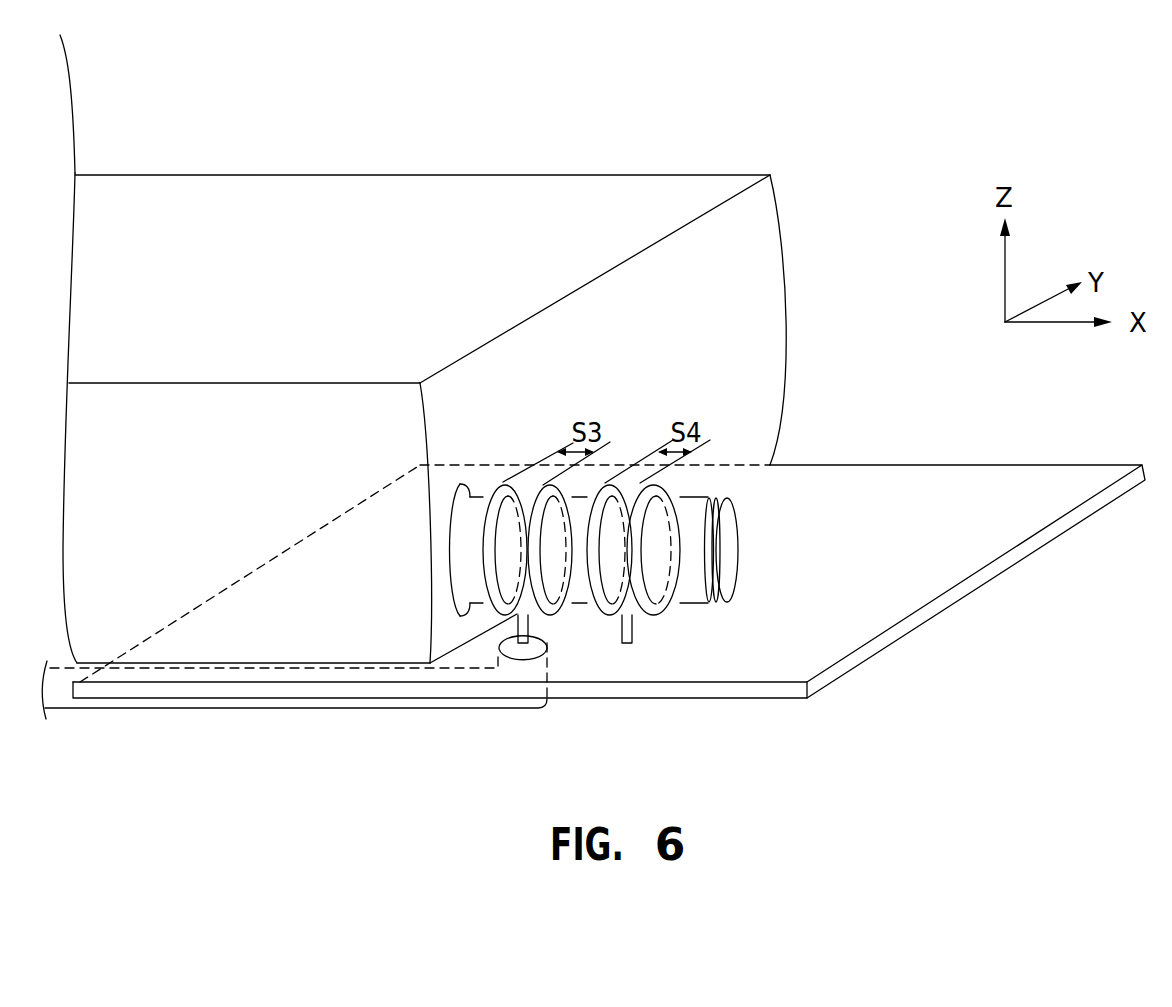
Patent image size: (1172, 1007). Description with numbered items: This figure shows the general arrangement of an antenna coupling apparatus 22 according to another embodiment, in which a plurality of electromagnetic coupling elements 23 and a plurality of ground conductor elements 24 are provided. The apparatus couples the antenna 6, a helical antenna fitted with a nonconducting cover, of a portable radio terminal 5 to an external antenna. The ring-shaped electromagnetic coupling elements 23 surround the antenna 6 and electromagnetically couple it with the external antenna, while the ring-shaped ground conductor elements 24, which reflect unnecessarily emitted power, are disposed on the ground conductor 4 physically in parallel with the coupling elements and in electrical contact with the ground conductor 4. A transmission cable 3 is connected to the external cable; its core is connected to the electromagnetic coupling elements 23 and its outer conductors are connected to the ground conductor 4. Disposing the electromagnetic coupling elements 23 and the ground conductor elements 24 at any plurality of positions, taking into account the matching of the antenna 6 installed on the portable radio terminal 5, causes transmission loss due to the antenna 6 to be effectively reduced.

The antenna coupling apparatus 22 is at (883, 83).
The portable radio terminal 5 is at (457, 188).
The antenna 6 is at (690, 513).
The ground conductor 4 is at (938, 612).
The transmission cable 3 is at (262, 707).
The electromagnetic coupling elements 23 is at (528, 623).
The ground conductor elements 24 is at (632, 623).